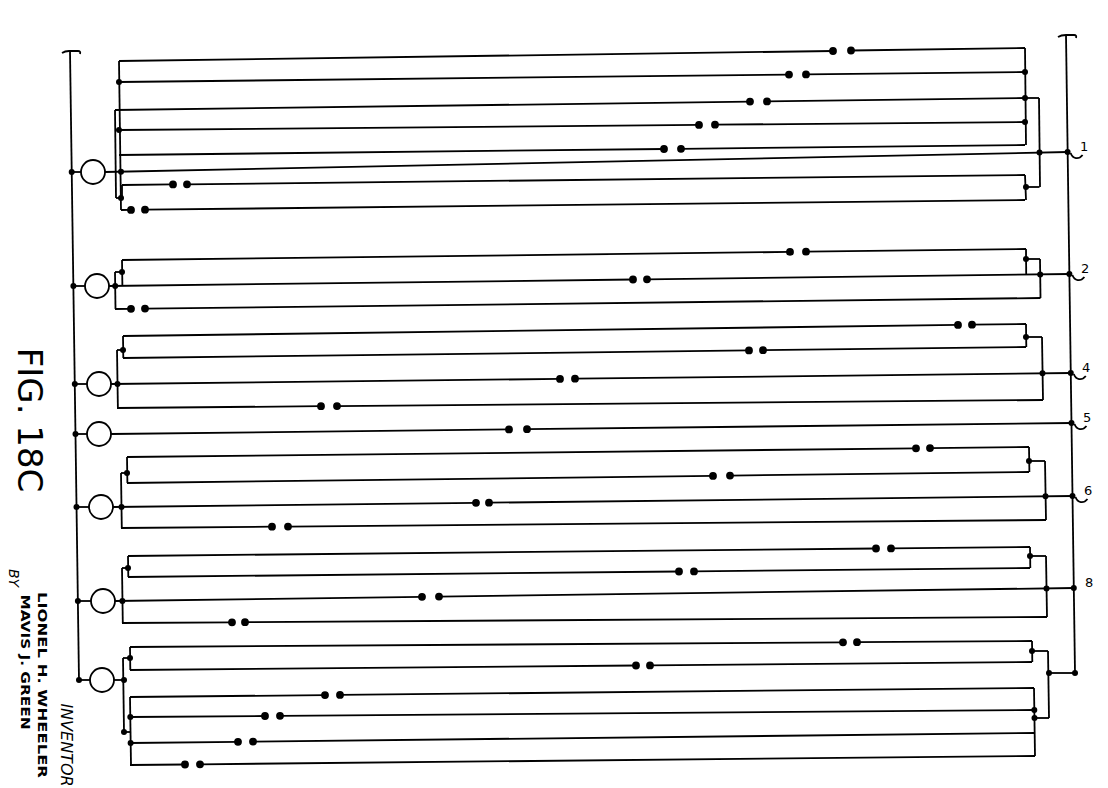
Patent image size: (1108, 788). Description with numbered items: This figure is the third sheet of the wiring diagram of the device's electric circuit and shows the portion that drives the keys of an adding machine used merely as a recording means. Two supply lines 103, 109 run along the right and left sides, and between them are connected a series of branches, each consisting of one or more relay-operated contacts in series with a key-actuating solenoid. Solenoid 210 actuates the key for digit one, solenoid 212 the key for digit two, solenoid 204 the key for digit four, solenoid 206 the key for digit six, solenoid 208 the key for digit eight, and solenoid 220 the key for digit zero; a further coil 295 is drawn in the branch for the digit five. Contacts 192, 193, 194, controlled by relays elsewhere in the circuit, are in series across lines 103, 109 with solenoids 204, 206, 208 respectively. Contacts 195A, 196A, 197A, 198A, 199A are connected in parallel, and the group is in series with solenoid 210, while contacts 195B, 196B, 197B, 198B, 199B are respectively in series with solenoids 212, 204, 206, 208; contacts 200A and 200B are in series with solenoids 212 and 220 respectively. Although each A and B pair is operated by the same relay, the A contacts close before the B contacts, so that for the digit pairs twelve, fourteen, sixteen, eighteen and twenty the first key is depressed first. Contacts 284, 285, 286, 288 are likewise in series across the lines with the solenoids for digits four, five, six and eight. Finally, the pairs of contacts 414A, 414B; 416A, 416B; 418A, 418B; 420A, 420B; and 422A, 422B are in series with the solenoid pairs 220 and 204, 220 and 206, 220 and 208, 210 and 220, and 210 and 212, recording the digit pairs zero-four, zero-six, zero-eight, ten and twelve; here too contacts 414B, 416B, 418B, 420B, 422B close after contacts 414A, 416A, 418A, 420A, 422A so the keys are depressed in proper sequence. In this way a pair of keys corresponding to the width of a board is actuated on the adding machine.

The line 103 is at (1077, 64).
The line 109 is at (68, 144).
The contacts 192 is at (960, 317).
The contacts 193 is at (918, 440).
The contacts 194 is at (878, 540).
The contacts 195A is at (835, 43).
The contacts 195B is at (845, 634).
The contacts 196A is at (791, 67).
The contacts 196B is at (792, 244).
The contacts 197A is at (752, 94).
The contacts 197B is at (751, 342).
The contacts 198A is at (701, 117).
The contacts 198B is at (715, 468).
The contacts 199A is at (666, 141).
The contacts 199B is at (681, 564).
The contacts 200A is at (635, 272).
The contacts 200B is at (638, 658).
The solenoid 204 is at (112, 372).
The solenoid 206 is at (114, 496).
The solenoid 208 is at (116, 590).
The solenoid 210 is at (106, 160).
The solenoid 212 is at (110, 274).
The solenoid 220 is at (115, 668).
The contacts 284 is at (562, 371).
The contacts 285 is at (506, 422).
The contacts 286 is at (478, 495).
The contacts 288 is at (424, 589).
The relay coil 5 295 is at (112, 422).
The contacts 414A is at (327, 687).
The contacts 414B is at (323, 398).
The contacts 416A is at (267, 708).
The contacts 416B is at (274, 519).
The contacts 418A is at (240, 734).
The contacts 418B is at (234, 614).
The contacts 420A is at (175, 176).
The contacts 420B is at (187, 756).
The contacts 422A is at (133, 202).
The contacts 422B is at (133, 301).